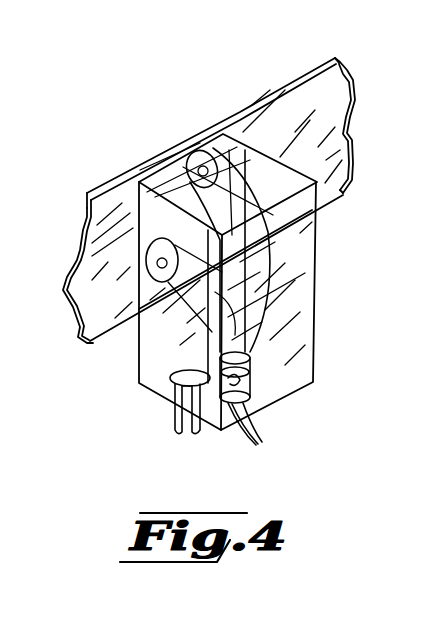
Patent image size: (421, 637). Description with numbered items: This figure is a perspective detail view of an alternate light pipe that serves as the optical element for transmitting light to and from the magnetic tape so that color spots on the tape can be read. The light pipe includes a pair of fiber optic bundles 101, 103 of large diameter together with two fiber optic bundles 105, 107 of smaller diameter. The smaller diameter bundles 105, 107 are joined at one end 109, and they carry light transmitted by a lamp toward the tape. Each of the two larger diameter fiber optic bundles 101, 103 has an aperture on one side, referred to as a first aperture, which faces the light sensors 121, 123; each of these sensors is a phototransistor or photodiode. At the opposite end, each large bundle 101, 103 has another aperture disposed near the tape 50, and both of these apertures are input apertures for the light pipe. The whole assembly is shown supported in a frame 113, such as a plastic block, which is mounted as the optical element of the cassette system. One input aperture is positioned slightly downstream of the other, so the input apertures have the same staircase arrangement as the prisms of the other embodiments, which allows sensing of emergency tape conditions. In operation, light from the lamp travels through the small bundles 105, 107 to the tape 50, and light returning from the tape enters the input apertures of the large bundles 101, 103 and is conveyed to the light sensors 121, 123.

The tape 50 is at (330, 80).
The fiber optic bundle 101 is at (145, 291).
The fiber optic bundle 103 is at (229, 150).
The fiber optic bundle 105 is at (248, 340).
The fiber optic bundle 107 is at (232, 318).
The joined end 109 is at (252, 362).
The frame 113 is at (230, 174).
The light sensor 121 is at (172, 400).
The light sensor 123 is at (152, 385).